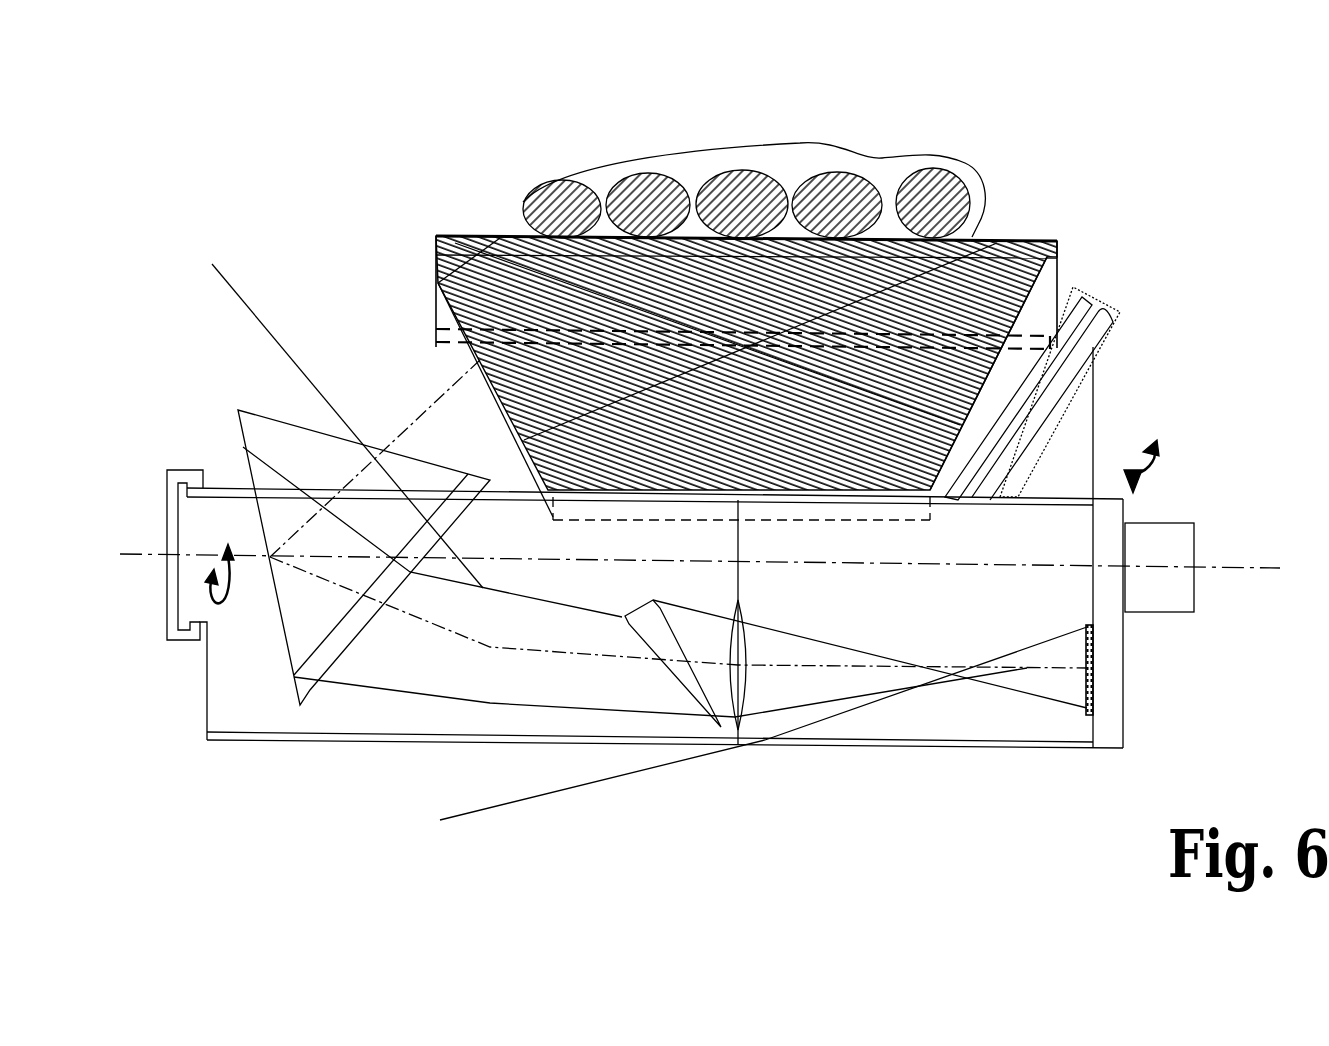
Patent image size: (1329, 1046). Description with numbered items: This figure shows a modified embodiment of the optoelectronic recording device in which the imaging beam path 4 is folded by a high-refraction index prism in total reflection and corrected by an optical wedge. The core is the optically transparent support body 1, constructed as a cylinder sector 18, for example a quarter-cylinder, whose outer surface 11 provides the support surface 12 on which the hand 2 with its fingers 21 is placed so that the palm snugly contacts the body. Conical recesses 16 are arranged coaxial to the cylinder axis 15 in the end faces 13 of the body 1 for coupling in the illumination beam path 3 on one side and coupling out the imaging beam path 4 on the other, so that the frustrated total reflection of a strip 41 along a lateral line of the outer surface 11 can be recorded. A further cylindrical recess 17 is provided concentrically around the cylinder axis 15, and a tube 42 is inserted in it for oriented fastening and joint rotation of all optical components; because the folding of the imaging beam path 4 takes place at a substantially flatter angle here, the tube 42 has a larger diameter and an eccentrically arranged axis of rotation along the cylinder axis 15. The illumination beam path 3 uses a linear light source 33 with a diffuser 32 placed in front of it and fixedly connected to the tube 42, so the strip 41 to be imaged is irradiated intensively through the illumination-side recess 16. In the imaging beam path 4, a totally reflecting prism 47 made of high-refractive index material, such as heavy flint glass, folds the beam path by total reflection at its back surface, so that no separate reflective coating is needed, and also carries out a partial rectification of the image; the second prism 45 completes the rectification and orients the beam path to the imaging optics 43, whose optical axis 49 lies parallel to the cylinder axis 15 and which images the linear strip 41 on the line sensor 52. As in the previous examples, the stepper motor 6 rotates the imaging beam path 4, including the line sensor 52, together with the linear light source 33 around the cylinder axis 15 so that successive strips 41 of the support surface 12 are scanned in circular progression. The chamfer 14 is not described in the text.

The support body 1 is at (455, 243).
The hand 2 is at (680, 158).
The illumination beam path 3 is at (1058, 240).
The imaging beam path 4 is at (433, 290).
The stepper motor 6 is at (1160, 598).
The outer surface 11 is at (477, 232).
The support surface 12 is at (993, 240).
The end faces 13 is at (1057, 257).
The chamfer 14 is at (433, 250).
The cylinder axis 15 is at (1225, 565).
The conical recesses 16 is at (1030, 310).
The cylindrical recess 17 is at (880, 493).
The cylinder sector 18 is at (433, 280).
The fingers 21 is at (773, 183).
The diffuser 32 is at (1085, 299).
The linear light source 33 is at (1073, 365).
The strip 41 is at (764, 257).
The tube 42 is at (372, 690).
The imaging optics 43 is at (735, 720).
The second prism 45 is at (687, 688).
The totally reflecting prism 47 is at (280, 628).
The optical axis 49 is at (243, 447).
The line sensor 52 is at (1087, 713).